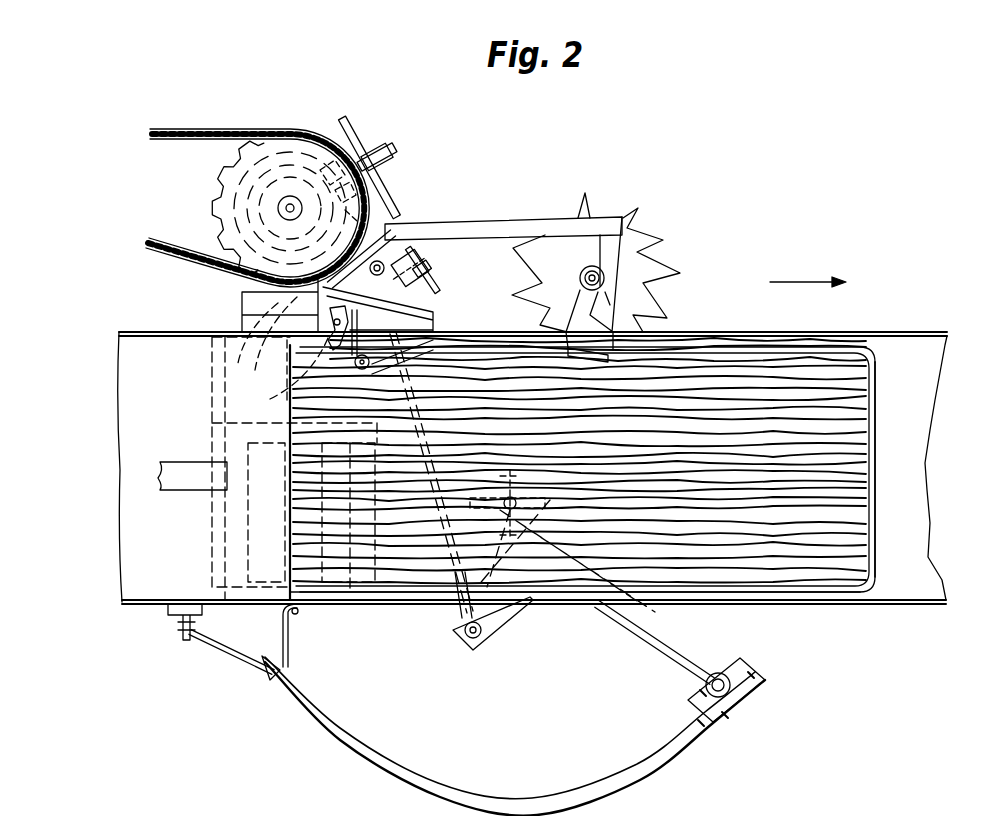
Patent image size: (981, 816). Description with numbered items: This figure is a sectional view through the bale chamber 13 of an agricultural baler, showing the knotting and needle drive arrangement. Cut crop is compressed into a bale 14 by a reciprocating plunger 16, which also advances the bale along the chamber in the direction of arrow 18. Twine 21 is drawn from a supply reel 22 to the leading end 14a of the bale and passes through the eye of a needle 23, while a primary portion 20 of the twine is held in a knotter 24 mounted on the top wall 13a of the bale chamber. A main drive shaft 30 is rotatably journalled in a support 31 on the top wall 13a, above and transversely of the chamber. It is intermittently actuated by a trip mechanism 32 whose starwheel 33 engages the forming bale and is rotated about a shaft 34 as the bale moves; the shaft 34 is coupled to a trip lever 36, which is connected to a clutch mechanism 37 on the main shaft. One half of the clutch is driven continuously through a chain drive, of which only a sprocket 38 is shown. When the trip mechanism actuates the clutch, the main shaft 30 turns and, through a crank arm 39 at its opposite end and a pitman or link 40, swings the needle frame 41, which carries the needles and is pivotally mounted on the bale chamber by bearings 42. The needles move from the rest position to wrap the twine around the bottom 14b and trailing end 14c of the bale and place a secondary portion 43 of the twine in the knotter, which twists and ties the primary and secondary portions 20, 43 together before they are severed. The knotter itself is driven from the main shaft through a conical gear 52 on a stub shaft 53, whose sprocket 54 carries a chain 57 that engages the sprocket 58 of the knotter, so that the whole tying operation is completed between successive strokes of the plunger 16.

The bale chamber 13 is at (912, 332).
The top wall of the bale chamber 13a is at (740, 350).
The bale 14 is at (860, 432).
The leading end of the bale 14a is at (878, 478).
The bottom of the bale 14b is at (778, 603).
The trailing end of the bale 14c is at (285, 428).
The reciprocating plunger 16 is at (205, 392).
The arrow indicating direction of bale movement 18 is at (793, 282).
The primary portion of the twine 20 is at (395, 328).
The twine 21 is at (250, 665).
The supply reel 22 is at (243, 555).
The needle 23 is at (365, 762).
The knotter 24 is at (440, 258).
The main drive shaft 30 is at (285, 208).
The support 31 is at (240, 300).
The trip mechanism 32 is at (623, 186).
The starwheel 33 is at (667, 283).
The shaft of the starwheel 34 is at (605, 276).
The trip lever 36 is at (510, 220).
The clutch mechanism 37 is at (283, 152).
The sprocket 38 is at (220, 170).
The crank arm 39 is at (393, 217).
The pitman or link 40 is at (433, 455).
The needle frame 41 is at (690, 660).
The bearings 42 is at (520, 505).
The secondary portion of the twine 43 is at (210, 645).
The conical gear 52 is at (305, 170).
The stub shaft 53 is at (388, 157).
The sprocket 54 is at (350, 127).
The chain 57 is at (418, 240).
The sprocket of the knotter 58 is at (437, 292).